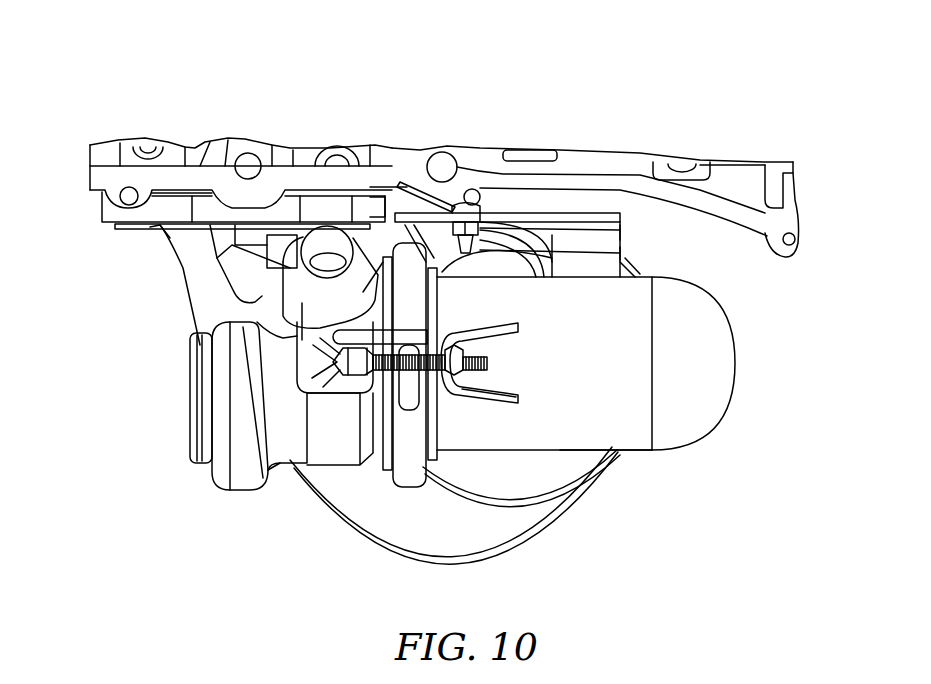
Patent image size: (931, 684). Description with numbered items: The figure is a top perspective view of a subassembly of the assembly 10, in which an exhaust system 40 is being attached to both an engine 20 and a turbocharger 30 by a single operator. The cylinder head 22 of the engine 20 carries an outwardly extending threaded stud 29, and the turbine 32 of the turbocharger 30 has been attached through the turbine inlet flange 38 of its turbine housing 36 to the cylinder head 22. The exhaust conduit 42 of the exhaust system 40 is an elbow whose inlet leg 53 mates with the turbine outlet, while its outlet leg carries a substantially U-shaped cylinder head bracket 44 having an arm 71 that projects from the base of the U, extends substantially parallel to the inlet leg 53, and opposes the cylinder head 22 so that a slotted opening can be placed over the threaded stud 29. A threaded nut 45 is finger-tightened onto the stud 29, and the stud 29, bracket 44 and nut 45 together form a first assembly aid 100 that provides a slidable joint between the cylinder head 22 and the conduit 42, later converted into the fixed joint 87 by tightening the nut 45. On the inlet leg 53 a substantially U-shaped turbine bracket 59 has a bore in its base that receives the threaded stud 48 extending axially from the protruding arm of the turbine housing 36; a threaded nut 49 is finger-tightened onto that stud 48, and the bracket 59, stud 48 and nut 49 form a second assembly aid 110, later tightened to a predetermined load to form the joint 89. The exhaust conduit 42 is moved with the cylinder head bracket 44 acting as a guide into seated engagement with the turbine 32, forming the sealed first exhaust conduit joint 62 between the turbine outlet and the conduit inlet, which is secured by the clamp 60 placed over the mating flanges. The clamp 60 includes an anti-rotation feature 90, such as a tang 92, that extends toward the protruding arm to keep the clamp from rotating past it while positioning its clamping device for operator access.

The assembly 10 is at (137, 483).
The engine 20 is at (554, 150).
The cylinder head 22 is at (567, 161).
The threaded stud 29 is at (620, 253).
The turbocharger 30 is at (197, 481).
The turbine 32 is at (237, 491).
The turbine housing 36 is at (277, 455).
The turbine inlet flange 38 is at (160, 228).
The exhaust system 40 is at (747, 316).
The exhaust conduit 42 is at (750, 356).
The cylinder head bracket 44 is at (629, 221).
The threaded nut 45 is at (620, 230).
The threaded stud 48 is at (488, 365).
The threaded nut 49 is at (462, 352).
The inlet leg 53 is at (628, 433).
The turbine bracket 59 is at (483, 393).
The clamp 60 is at (388, 473).
The first exhaust conduit joint 62 is at (403, 489).
The arm 71 is at (438, 204).
The joint 87 is at (458, 205).
The joint 89 is at (455, 340).
The anti-rotation feature 90 is at (372, 321).
The tang 92 is at (332, 337).
The first assembly aid 100 is at (423, 212).
The second assembly aid 110 is at (497, 379).